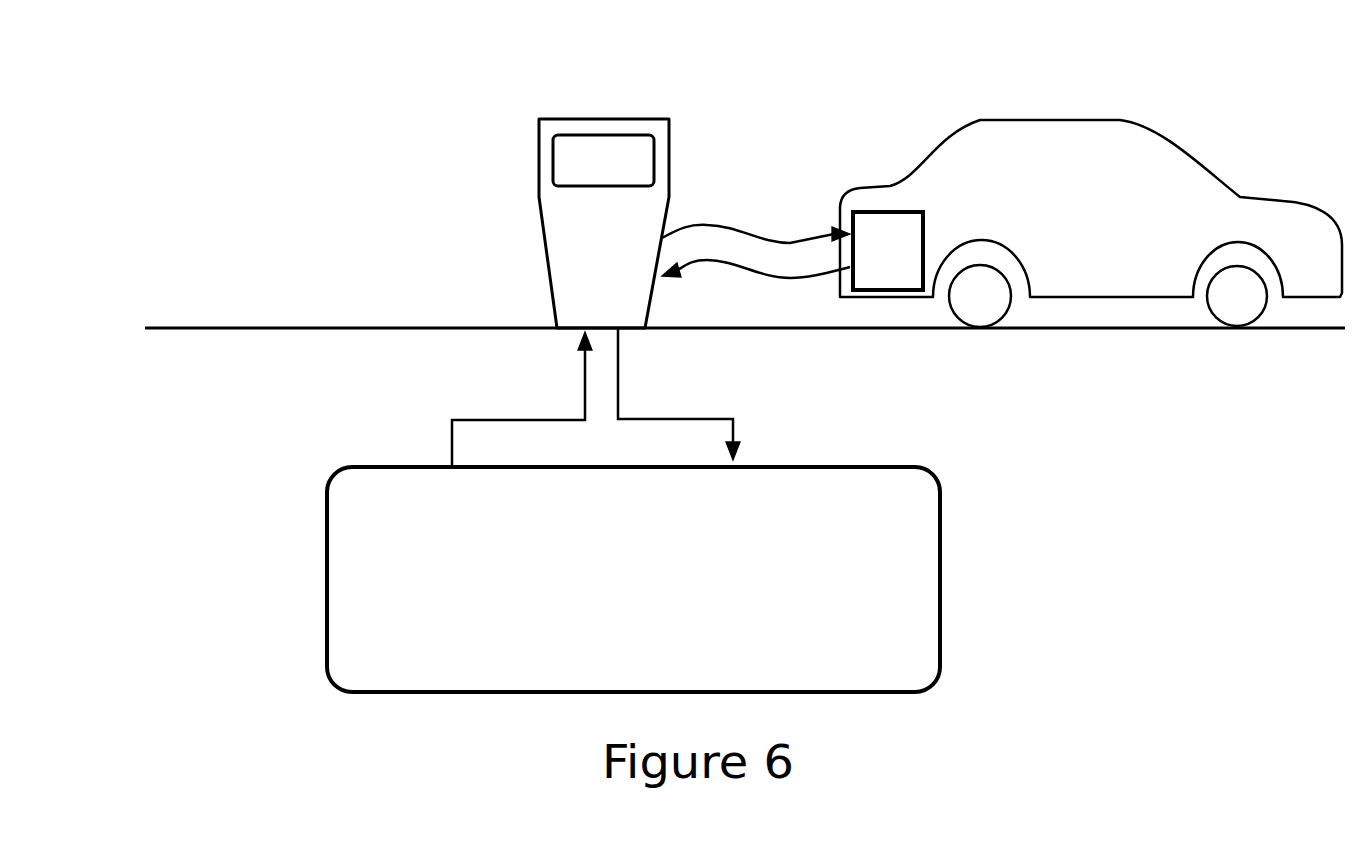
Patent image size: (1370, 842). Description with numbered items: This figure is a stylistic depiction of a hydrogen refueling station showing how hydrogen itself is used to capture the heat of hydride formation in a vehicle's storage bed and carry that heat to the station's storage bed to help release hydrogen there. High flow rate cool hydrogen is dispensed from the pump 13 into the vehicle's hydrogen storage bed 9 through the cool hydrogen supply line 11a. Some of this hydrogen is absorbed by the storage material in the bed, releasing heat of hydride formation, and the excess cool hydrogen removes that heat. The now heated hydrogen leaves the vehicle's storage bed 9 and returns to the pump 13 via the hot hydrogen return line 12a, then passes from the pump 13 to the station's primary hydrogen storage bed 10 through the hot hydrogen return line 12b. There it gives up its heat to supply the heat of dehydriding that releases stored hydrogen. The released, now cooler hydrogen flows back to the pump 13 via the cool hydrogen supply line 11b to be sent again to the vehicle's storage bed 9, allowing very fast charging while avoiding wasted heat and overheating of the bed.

The pump 13 is at (570, 119).
The vehicle's hydrogen storage bed 9 is at (882, 232).
The cool hydrogen supply line 11a is at (758, 228).
The hot hydrogen return line 12a is at (745, 280).
The cool hydrogen supply line 11b is at (462, 415).
The hot hydrogen return line 12b is at (728, 413).
The station's primary hydrogen storage bed 10 is at (873, 561).